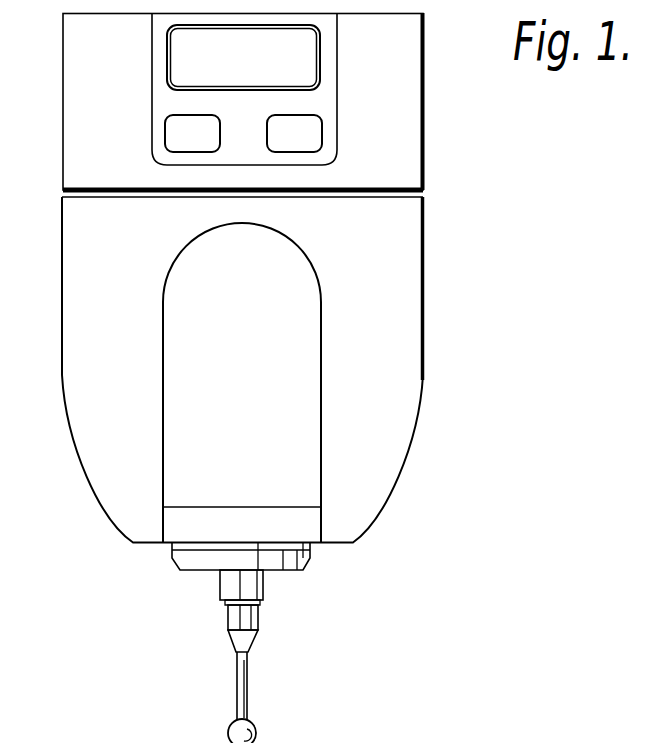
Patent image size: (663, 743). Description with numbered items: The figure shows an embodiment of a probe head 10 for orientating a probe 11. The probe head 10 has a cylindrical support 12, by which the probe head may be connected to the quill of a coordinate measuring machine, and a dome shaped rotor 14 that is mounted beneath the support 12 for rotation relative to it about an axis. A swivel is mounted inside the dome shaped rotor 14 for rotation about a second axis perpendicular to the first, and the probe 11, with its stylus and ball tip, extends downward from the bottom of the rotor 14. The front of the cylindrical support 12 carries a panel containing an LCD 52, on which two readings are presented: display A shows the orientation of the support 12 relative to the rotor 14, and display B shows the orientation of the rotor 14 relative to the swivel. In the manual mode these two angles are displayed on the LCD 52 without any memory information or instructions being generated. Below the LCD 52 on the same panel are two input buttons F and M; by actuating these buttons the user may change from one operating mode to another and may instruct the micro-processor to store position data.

The probe head 10 is at (476, 236).
The probe 11 is at (288, 570).
The cylindrical support 12 is at (393, 160).
The dome shaped rotor 14 is at (403, 337).
The LCD 52 is at (170, 72).
The display A is at (187, 58).
The display B is at (300, 55).
The input button F is at (175, 128).
The input button M is at (307, 133).